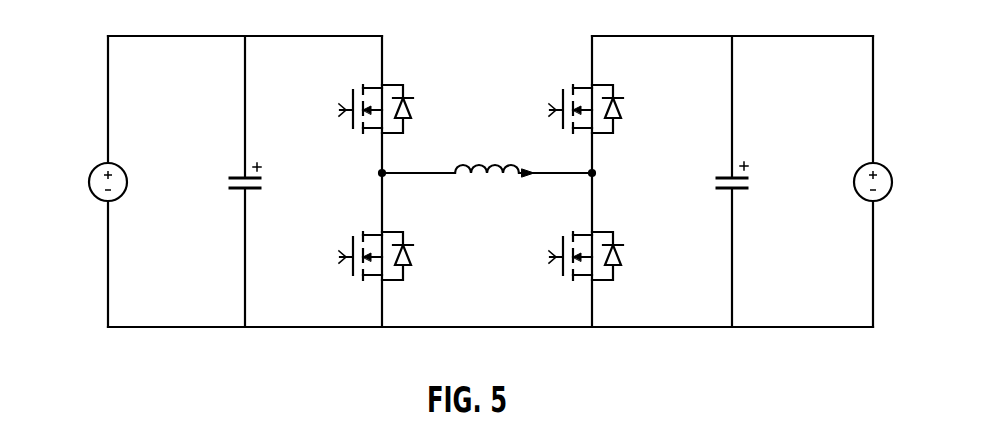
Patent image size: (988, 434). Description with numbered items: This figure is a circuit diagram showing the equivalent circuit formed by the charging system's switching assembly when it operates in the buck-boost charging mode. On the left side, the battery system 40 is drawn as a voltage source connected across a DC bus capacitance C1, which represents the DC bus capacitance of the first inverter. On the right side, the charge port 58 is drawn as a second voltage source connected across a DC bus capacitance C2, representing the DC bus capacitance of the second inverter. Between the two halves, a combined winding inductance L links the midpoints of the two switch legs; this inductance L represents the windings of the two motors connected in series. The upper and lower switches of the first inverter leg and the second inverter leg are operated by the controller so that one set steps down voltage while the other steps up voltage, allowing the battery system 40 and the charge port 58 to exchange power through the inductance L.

The battery system 40 is at (94, 168).
The charge port 58 is at (886, 168).
The DC bus capacitance of the first inverter C1 is at (227, 181).
The DC bus capacitance of the second inverter C2 is at (713, 181).
The combined winding inductance L is at (487, 150).